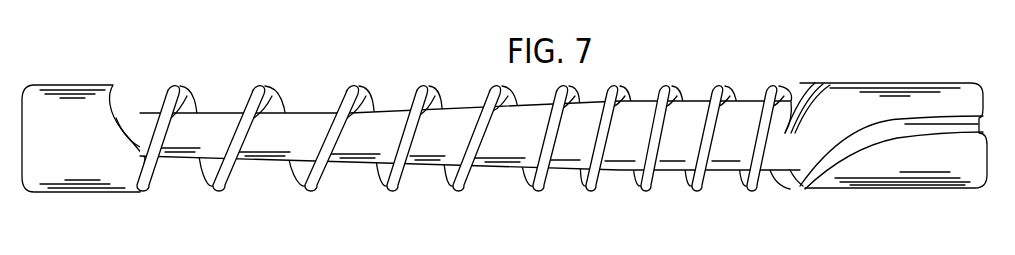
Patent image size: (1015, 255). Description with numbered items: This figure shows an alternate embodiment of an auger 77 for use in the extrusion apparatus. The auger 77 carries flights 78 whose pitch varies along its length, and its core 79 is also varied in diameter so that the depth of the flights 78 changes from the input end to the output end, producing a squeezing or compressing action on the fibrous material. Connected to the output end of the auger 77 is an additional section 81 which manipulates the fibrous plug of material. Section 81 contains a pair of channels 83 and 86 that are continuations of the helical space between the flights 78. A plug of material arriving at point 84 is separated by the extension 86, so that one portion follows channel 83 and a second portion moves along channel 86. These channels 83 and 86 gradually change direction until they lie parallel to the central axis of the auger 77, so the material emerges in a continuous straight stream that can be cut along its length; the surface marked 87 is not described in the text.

The auger 77 is at (89, 80).
The flights 78 is at (468, 135).
The core 79 is at (373, 133).
The additional section 81 is at (867, 78).
The channel 83 is at (800, 111).
The point 84 is at (769, 178).
The channel (extension) 86 is at (782, 132).
The helical land surface 87 is at (857, 145).